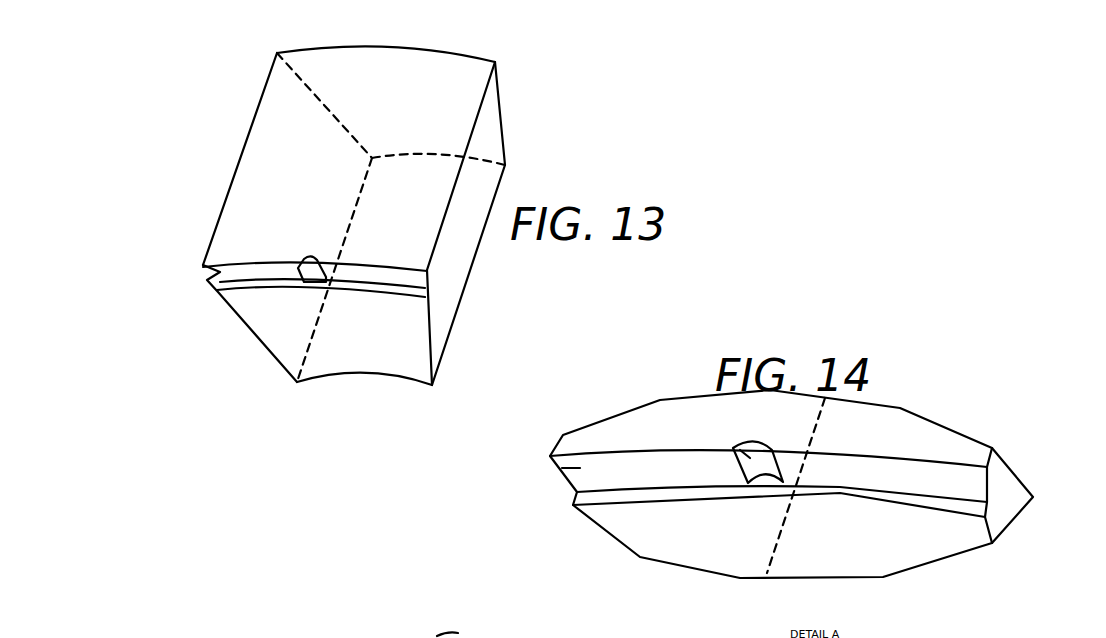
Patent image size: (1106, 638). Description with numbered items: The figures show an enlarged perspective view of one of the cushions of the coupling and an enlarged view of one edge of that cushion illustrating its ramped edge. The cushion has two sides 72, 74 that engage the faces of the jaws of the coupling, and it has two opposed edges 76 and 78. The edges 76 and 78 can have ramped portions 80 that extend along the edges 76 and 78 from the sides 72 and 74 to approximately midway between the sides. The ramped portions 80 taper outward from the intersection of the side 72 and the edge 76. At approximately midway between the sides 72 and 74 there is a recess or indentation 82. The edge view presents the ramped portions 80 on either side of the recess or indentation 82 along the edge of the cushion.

In FIG. 13, the side 72 is at (490, 183).
In FIG. 13, the side 74 is at (237, 203).
In FIG. 13, the edge 76 is at (212, 280).
In FIG. 13, the edge 78 is at (455, 48).
In FIG. 13, the ramped portion 80 is at (413, 281).
In FIG. 14, the ramped portion 80 is at (562, 468).
In FIG. 13, the recess or indentation 82 is at (303, 272).
In FIG. 14, the recess or indentation 82 is at (737, 444).